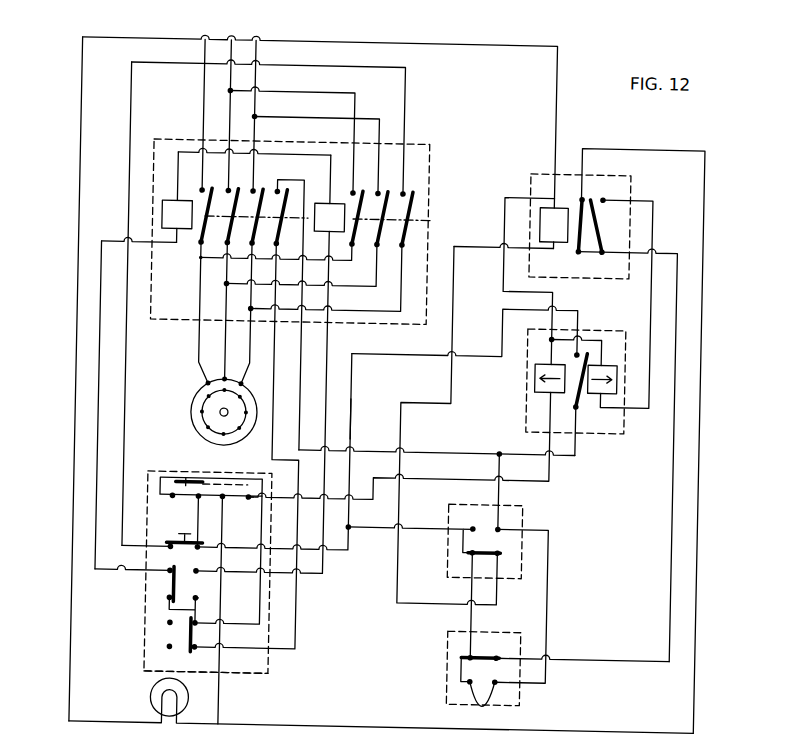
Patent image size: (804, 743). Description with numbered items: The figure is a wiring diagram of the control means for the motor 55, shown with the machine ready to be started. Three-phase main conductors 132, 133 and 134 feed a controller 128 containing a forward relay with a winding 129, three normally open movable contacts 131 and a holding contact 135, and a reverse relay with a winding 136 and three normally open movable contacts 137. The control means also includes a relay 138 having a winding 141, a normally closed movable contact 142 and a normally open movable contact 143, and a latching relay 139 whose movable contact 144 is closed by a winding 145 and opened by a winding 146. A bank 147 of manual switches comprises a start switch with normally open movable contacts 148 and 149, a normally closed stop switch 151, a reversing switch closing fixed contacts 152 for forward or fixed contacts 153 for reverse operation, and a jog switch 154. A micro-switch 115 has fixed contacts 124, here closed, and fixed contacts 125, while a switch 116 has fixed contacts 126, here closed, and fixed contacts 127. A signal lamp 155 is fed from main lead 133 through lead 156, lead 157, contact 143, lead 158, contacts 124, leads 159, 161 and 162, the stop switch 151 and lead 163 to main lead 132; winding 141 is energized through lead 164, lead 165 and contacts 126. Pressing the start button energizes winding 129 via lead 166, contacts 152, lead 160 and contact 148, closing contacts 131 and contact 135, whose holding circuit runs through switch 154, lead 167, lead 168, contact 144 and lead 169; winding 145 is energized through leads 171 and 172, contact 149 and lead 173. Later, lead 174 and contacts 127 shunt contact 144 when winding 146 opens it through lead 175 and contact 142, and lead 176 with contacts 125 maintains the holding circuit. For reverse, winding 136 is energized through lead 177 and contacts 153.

The motor 55 is at (192, 416).
The switch 115 is at (526, 698).
The switch 116 is at (525, 528).
The fixed contacts 124 is at (494, 656).
The fixed contacts 125 is at (488, 704).
The fixed contacts 126 is at (471, 556).
The fixed contacts 127 is at (476, 528).
The controller 128 is at (425, 170).
The winding 129 is at (190, 233).
The movable contacts 131 is at (200, 262).
The main electrical conductor 132 is at (198, 30).
The main electrical conductor 133 is at (222, 8).
The main electrical conductor 134 is at (250, 28).
The movable contact 135 is at (274, 194).
The winding 136 is at (326, 205).
The movable contacts 137 is at (405, 220).
The relay 138 is at (627, 200).
The relay 139 is at (625, 346).
The winding 141 is at (558, 205).
The movable contact 142 is at (600, 225).
The movable contact 143 is at (588, 245).
The movable contact 144 is at (590, 400).
The winding 145 is at (535, 384).
The winding 146 is at (617, 368).
The bank of manually operable switches 147 is at (274, 672).
The movable contact 148 is at (185, 482).
The movable contact 149 is at (245, 499).
The stop switch 151 is at (188, 538).
The fixed contacts 152 is at (178, 602).
The fixed contacts 153 is at (200, 602).
The switch 154 is at (194, 636).
The signal lamp 155 is at (157, 702).
The lead 156 is at (76, 398).
The lead 157 is at (350, 728).
The lead 158 is at (675, 600).
The lead 159 is at (476, 621).
The lead 160 is at (264, 606).
The lead 161 is at (352, 530).
The lead 162 is at (336, 551).
The lead 163 is at (126, 458).
The lead 164 is at (551, 52).
The lead 165 is at (452, 320).
The lead 166 is at (99, 247).
The lead 167 is at (300, 632).
The lead 168 is at (455, 452).
The lead 169 is at (352, 420).
The lead 171 is at (502, 222).
The lead 172 is at (551, 478).
The lead 173 is at (225, 715).
The lead 174 is at (501, 495).
The lead 175 is at (650, 310).
The lead 176 is at (552, 582).
The lead 177 is at (352, 354).